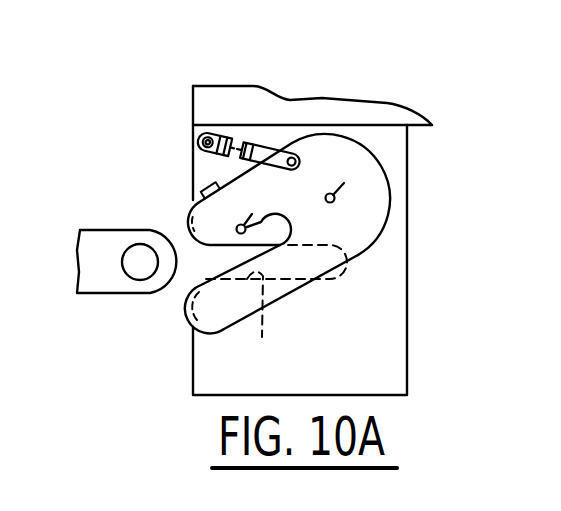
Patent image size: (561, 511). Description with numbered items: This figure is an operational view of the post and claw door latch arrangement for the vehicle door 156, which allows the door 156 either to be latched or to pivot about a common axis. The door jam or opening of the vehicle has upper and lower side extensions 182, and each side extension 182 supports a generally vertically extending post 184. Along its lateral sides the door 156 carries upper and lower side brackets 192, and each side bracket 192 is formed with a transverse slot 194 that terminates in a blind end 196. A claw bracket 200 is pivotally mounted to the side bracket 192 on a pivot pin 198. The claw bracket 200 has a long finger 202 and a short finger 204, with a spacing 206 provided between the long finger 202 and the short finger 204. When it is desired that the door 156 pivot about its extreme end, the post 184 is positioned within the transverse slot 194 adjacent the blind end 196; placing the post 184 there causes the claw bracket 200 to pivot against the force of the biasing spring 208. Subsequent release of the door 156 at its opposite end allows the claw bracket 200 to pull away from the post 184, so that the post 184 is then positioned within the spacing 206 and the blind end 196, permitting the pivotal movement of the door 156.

The door 156 is at (387, 103).
The side extension 182 is at (100, 230).
The post 184 is at (141, 274).
The side bracket 192 is at (408, 270).
The transverse slot 194 is at (264, 320).
The blind end 196 is at (343, 270).
The pivot pin 198 is at (341, 178).
The claw bracket 200 is at (393, 203).
The long finger 202 is at (211, 320).
The short finger 204 is at (193, 203).
The spacing 206 is at (261, 206).
The biasing spring 208 is at (239, 138).